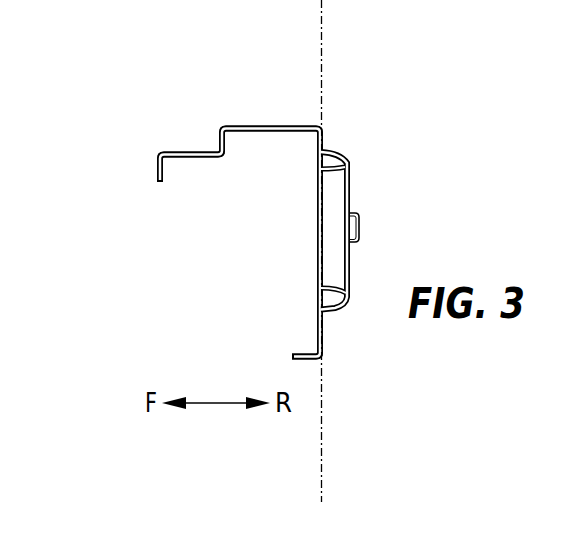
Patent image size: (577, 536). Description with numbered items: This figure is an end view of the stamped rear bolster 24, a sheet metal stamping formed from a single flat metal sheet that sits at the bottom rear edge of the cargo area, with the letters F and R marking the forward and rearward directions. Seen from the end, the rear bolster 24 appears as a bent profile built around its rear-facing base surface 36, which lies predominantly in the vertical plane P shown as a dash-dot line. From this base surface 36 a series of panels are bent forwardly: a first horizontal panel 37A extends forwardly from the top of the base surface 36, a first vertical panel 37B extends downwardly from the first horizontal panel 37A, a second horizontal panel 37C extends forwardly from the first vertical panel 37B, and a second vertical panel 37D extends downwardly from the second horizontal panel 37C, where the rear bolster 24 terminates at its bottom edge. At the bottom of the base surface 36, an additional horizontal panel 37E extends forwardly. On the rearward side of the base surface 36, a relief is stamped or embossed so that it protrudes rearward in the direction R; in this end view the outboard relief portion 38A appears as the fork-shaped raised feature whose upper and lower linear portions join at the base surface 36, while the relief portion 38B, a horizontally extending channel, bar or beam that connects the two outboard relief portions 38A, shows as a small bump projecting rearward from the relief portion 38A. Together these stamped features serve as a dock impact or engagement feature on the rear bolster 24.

The rear bolster 24 is at (173, 106).
The rear-facing base surface 36 is at (241, 221).
The first horizontal panel 37A is at (280, 125).
The first vertical panel 37B is at (215, 148).
The second horizontal panel 37C is at (183, 150).
The second vertical panel 37D is at (158, 172).
The additional horizontal panel 37E is at (303, 352).
The outboard relief portion 38A is at (349, 167).
The connecting relief portion 38B is at (360, 227).
The vertical plane P is at (322, 60).